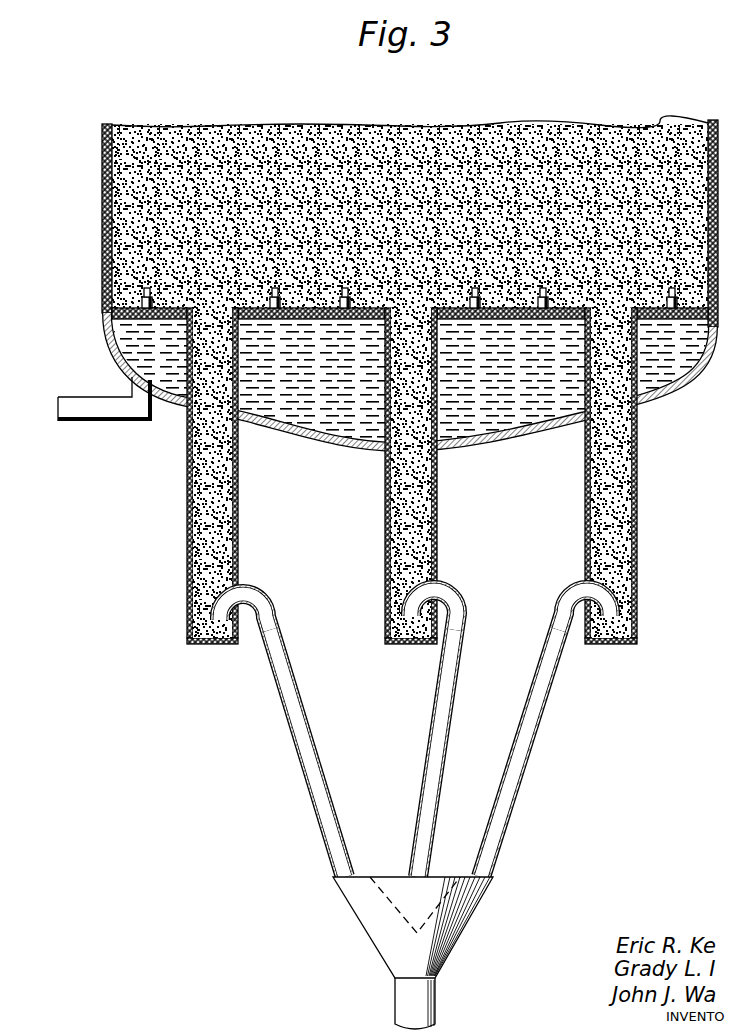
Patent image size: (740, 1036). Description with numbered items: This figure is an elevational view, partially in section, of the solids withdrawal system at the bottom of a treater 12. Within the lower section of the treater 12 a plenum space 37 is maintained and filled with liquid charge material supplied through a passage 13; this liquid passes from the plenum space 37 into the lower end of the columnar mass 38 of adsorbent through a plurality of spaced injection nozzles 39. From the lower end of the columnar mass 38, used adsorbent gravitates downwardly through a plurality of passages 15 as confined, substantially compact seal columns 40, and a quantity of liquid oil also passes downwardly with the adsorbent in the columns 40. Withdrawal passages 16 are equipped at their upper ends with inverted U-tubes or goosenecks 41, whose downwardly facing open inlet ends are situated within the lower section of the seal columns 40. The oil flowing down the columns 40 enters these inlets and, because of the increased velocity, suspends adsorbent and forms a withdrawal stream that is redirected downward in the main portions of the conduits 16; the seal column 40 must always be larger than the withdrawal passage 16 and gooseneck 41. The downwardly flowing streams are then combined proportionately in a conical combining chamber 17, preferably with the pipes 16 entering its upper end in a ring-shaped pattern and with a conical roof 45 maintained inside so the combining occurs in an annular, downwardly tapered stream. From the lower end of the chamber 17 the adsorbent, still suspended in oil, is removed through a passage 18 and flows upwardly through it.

The treater 12 is at (102, 244).
The passage 13 is at (88, 422).
The passages 15 is at (187, 533).
The withdrawal passages 16 is at (415, 812).
The conical combining chamber 17 is at (377, 942).
The passage 18 is at (395, 1006).
The plenum space 37 is at (331, 423).
The columnar mass 38 is at (633, 127).
The injection nozzles 39 is at (340, 297).
The seal columns 40 is at (222, 534).
The goosenecks 41 is at (257, 588).
The conical roof 45 is at (441, 890).